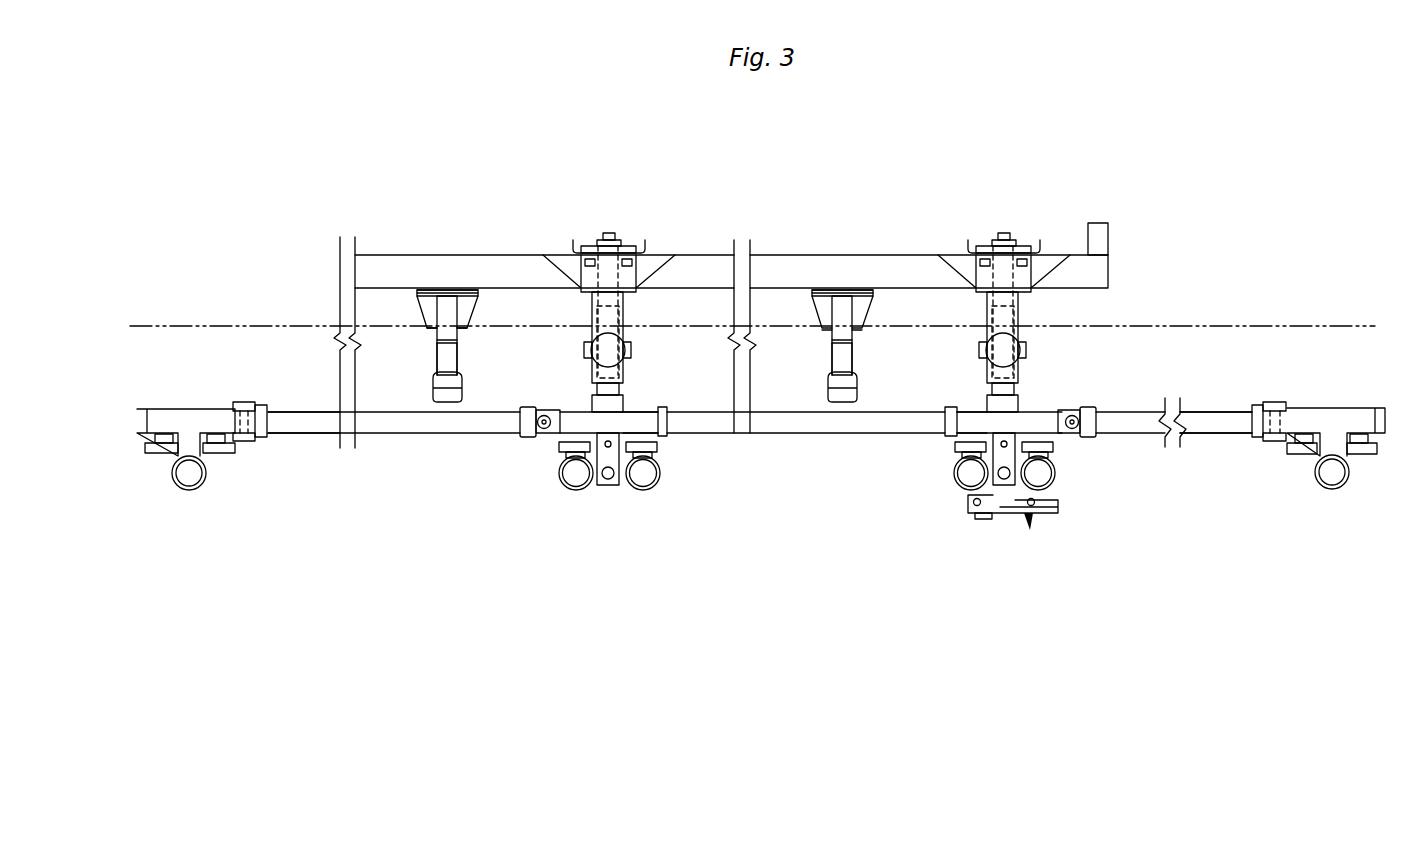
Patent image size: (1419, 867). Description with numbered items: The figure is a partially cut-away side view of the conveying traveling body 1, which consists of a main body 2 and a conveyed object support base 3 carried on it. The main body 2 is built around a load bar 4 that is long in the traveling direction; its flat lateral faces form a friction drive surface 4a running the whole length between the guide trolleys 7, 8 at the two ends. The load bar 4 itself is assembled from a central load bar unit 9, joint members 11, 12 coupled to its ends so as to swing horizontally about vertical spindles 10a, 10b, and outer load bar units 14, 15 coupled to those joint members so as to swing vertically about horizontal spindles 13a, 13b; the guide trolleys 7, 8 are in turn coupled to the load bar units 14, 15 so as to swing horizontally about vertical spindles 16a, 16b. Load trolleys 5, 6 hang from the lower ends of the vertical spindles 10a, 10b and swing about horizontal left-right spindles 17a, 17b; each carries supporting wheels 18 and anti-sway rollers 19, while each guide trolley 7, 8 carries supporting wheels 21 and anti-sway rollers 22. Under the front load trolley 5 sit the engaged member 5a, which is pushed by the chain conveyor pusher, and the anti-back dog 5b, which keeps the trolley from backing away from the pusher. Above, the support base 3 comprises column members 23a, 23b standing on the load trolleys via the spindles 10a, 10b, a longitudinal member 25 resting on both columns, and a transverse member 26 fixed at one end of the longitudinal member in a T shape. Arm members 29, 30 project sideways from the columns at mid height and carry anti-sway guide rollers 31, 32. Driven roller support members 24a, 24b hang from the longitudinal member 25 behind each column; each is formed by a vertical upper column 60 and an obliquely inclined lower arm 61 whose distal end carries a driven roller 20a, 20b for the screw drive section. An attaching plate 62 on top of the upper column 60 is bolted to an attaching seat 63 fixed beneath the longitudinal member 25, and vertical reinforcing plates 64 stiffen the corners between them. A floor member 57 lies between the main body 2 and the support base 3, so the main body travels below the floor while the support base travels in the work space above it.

The conveying traveling body 1 is at (877, 243).
The main body 2 is at (1212, 400).
The conveyed object support base 3 is at (535, 243).
The load bar 4 is at (476, 444).
The friction drive surface 4a is at (374, 428).
The load trolley 5 is at (985, 520).
The engaged member 5a is at (1030, 520).
The anti-back dog 5b is at (1000, 530).
The load trolley 6 is at (624, 497).
The guide trolley 7 is at (1331, 428).
The guide trolley 8 is at (185, 428).
The load bar unit 9 is at (720, 418).
The vertical spindle 10a is at (970, 418).
The vertical spindle 10b is at (640, 418).
The joint member 11 is at (1035, 410).
The joint member 12 is at (570, 418).
The horizontal spindle 13a is at (1082, 418).
The horizontal spindle 13b is at (535, 418).
The load bar unit 14 is at (1148, 427).
The load bar unit 15 is at (364, 391).
The vertical spindle 16a is at (1262, 418).
The vertical spindle 16b is at (244, 418).
The horizontal left-right spindle 17a is at (1000, 482).
The horizontal left-right spindle 17b is at (615, 482).
The supporting wheel 18 is at (570, 475).
The anti-sway roller 19 is at (560, 447).
The driven roller 20a is at (843, 403).
The driven roller 20b is at (447, 403).
The supporting wheel 21 is at (189, 480).
The anti-sway roller 22 is at (157, 455).
The column member 23a is at (985, 316).
The column member 23b is at (592, 316).
The driven roller support member 24a is at (864, 346).
The driven roller support member 24b is at (430, 347).
The longitudinal member 25 is at (724, 255).
The transverse member 26 is at (1103, 233).
The arm member 29 is at (988, 352).
The arm member 30 is at (590, 352).
The anti-sway guide roller 31 is at (1007, 352).
The anti-sway guide roller 32 is at (611, 340).
The floor member 57 is at (257, 326).
The upper column 60 is at (446, 300).
The lower arm 61 is at (445, 365).
The attaching plate 62 is at (428, 292).
The attaching seat 63 is at (462, 295).
The vertical reinforcing plate 64 is at (433, 323).